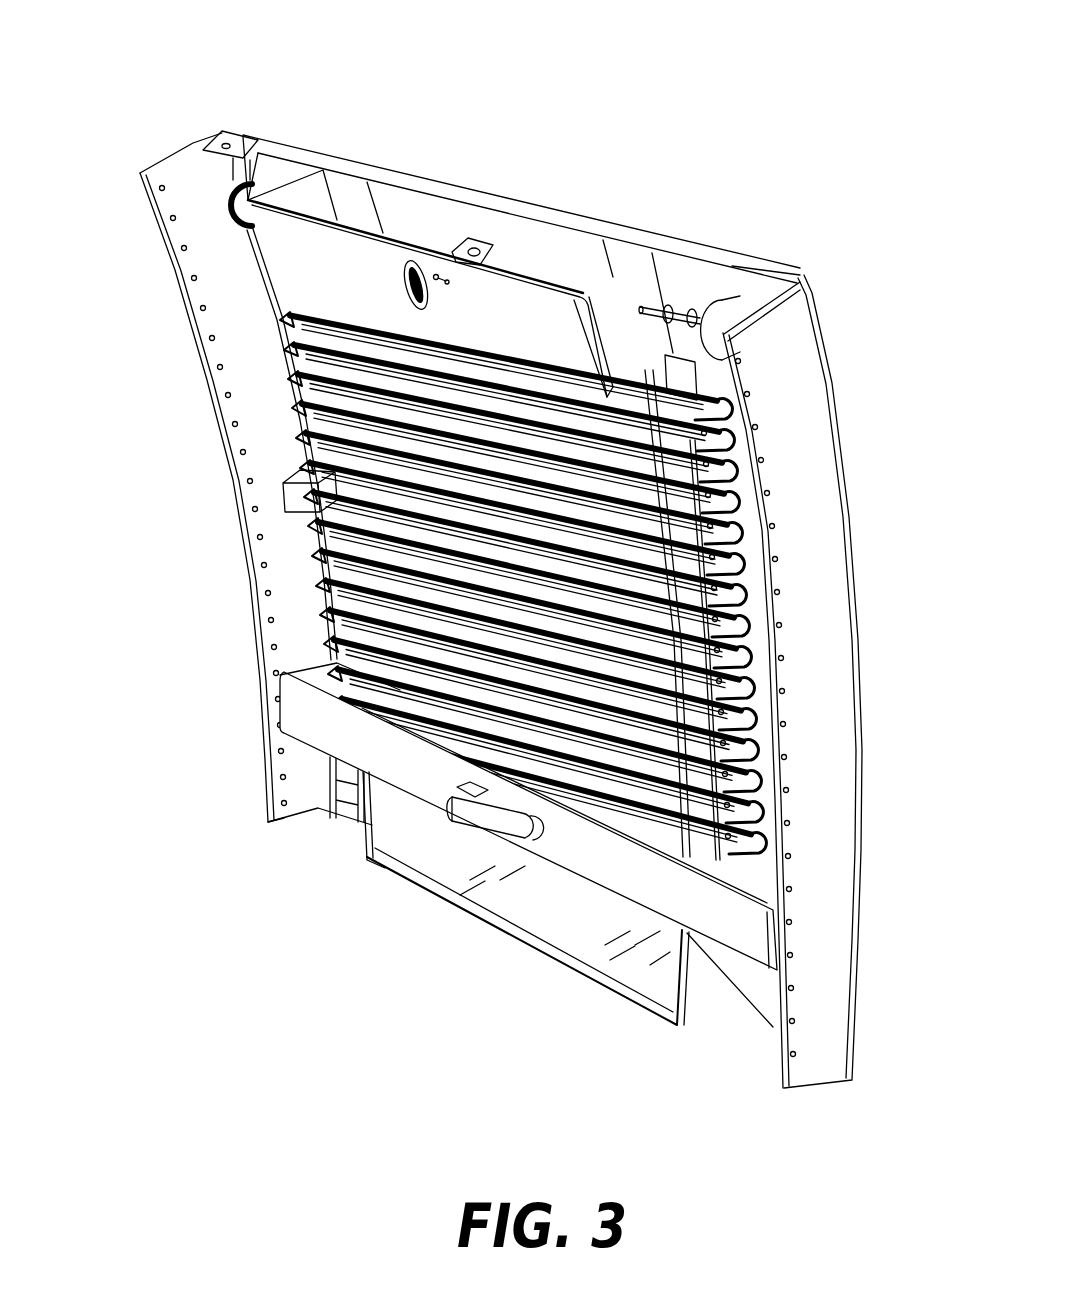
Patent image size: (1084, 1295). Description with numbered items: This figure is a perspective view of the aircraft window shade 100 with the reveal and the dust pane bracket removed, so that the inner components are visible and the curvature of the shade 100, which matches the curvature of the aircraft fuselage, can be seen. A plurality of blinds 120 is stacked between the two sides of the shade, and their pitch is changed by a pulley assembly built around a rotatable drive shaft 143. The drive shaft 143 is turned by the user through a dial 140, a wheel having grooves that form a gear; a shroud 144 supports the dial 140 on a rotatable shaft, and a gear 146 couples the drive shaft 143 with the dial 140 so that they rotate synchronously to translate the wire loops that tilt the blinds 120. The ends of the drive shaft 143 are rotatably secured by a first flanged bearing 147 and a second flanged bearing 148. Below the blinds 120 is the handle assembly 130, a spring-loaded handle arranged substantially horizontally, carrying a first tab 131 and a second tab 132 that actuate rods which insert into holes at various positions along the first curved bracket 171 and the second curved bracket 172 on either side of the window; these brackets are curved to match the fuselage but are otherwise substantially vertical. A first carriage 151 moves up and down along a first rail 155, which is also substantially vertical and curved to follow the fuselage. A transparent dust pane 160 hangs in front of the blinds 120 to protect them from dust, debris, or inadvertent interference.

The aircraft window shade 100 is at (241, 60).
The blinds 120 is at (753, 490).
The handle assembly 130 is at (715, 917).
The first tab 131 is at (457, 777).
The second tab 132 is at (523, 807).
The dial 140 is at (410, 262).
The drive shaft 143 is at (697, 310).
The shroud 144 is at (543, 305).
The gear 146 is at (463, 240).
The first flanged bearing 147 is at (233, 202).
The second flanged bearing 148 is at (723, 277).
The first carriage 151 is at (283, 482).
The first rail 155 is at (278, 333).
The dust pane 160 is at (600, 953).
The first curved bracket 171 is at (178, 210).
The second curved bracket 172 is at (807, 350).